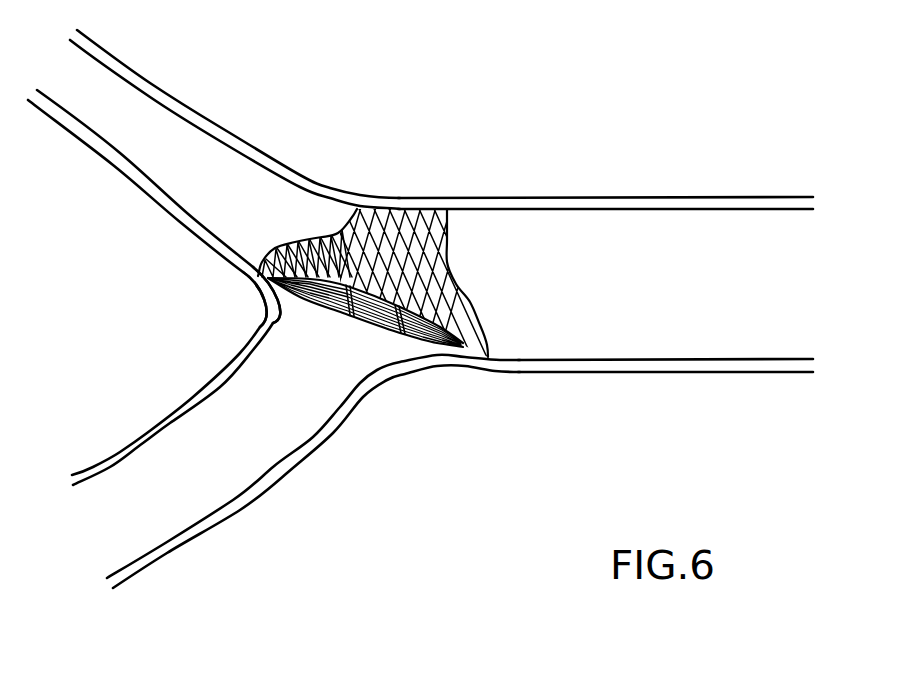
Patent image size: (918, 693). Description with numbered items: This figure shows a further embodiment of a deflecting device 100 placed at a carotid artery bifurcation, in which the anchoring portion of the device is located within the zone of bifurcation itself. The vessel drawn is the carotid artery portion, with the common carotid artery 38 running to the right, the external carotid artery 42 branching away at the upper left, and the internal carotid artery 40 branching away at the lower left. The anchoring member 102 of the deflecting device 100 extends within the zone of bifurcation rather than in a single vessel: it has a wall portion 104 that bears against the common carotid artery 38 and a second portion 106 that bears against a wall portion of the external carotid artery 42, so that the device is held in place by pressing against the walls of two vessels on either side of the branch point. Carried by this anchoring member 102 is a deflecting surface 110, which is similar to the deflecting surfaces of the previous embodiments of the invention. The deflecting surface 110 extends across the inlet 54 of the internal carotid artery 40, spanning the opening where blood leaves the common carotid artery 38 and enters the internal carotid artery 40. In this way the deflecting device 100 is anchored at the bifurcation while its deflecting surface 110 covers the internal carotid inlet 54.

The common carotid artery 38 is at (613, 203).
The internal carotid artery 40 is at (193, 547).
The external carotid artery 42 is at (137, 72).
The inlet 54 is at (308, 340).
The deflecting device 100 is at (346, 262).
The anchoring member 102 is at (352, 210).
The wall portion 104 is at (479, 345).
The second portion 106 is at (262, 282).
The deflecting surface 110 is at (367, 323).